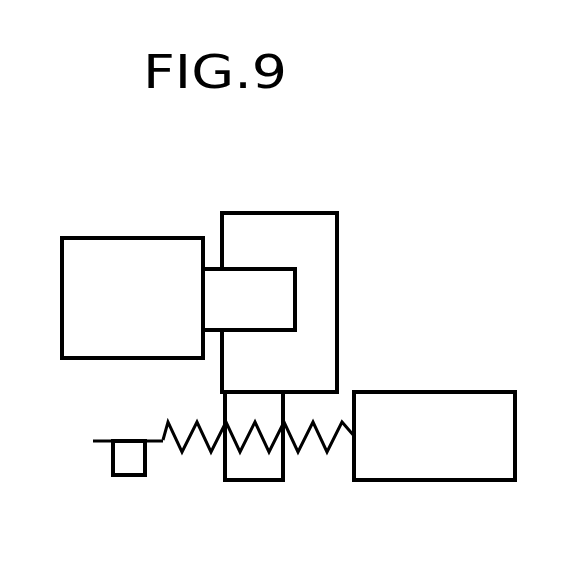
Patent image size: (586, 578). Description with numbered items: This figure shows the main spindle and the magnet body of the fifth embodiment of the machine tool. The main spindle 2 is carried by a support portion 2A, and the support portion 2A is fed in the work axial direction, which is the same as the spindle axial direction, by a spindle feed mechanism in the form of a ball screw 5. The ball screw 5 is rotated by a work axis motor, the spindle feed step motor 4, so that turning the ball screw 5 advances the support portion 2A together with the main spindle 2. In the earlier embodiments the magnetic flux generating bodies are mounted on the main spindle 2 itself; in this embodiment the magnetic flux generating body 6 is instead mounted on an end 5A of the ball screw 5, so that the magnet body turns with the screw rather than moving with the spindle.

The main spindle 2 is at (112, 212).
The support portion 2A is at (338, 243).
The spindle feed step motor 4 is at (407, 371).
The ball screw 5 is at (305, 453).
The end of the ball screw 5A is at (100, 441).
The magnetic flux generating body 6 is at (123, 476).